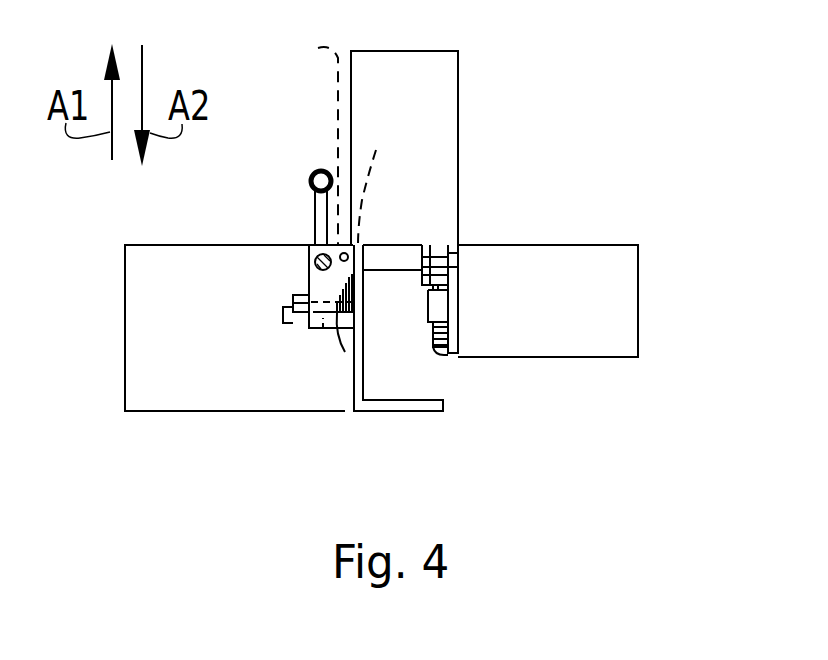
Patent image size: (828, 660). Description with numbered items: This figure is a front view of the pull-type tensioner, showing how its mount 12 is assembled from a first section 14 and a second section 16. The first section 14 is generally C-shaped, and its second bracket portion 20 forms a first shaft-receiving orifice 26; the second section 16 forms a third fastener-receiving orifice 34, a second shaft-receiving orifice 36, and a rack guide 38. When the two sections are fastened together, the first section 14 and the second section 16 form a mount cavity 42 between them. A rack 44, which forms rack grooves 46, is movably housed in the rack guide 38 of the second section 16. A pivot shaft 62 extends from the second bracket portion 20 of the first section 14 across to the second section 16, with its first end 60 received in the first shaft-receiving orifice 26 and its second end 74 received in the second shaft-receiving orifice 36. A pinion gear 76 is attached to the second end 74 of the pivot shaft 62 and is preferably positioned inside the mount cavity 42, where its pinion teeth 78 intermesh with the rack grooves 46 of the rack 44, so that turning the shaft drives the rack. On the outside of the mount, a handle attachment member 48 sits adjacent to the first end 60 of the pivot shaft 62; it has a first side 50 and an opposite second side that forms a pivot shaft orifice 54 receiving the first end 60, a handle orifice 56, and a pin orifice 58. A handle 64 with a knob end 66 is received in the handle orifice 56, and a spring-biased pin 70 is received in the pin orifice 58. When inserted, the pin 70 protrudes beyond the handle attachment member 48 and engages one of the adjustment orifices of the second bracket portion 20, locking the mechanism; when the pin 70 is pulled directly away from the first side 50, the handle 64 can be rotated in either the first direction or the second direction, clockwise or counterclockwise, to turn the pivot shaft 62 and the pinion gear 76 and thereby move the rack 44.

The mount 12 is at (430, 49).
The first section 14 is at (124, 341).
The second section 16 is at (648, 352).
The second bracket portion 20 is at (356, 411).
The first shaft-receiving orifice 26 is at (379, 178).
The third fastener-receiving orifice 34 is at (458, 253).
The second shaft-receiving orifice 36 is at (458, 267).
The rack guide 38 is at (458, 318).
The mount cavity 42 is at (414, 334).
The rack 44 is at (448, 345).
The rack grooves 46 is at (458, 334).
The handle attachment member 48 is at (345, 352).
The first side 50 is at (314, 246).
The pivot shaft orifice 54 is at (304, 135).
The handle orifice 56 is at (309, 264).
The pin orifice 58 is at (322, 335).
The first end 60 is at (316, 256).
The pivot shaft 62 is at (410, 245).
The handle 64 is at (314, 186).
The knob end 66 is at (318, 170).
The pin 70 is at (290, 318).
The second end 74 is at (446, 244).
The pinion gear 76 is at (412, 270).
The pinion teeth 78 is at (458, 284).